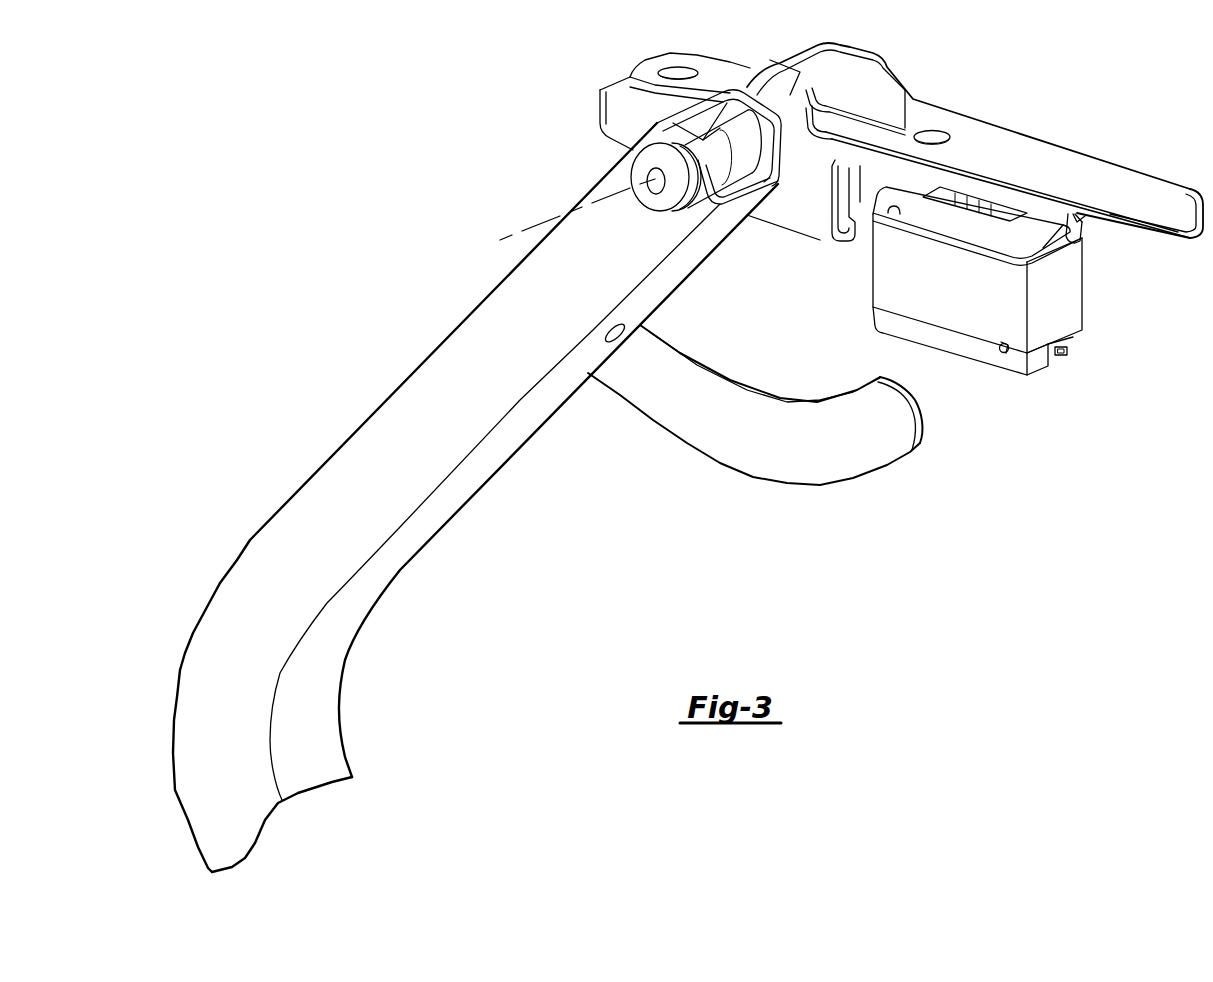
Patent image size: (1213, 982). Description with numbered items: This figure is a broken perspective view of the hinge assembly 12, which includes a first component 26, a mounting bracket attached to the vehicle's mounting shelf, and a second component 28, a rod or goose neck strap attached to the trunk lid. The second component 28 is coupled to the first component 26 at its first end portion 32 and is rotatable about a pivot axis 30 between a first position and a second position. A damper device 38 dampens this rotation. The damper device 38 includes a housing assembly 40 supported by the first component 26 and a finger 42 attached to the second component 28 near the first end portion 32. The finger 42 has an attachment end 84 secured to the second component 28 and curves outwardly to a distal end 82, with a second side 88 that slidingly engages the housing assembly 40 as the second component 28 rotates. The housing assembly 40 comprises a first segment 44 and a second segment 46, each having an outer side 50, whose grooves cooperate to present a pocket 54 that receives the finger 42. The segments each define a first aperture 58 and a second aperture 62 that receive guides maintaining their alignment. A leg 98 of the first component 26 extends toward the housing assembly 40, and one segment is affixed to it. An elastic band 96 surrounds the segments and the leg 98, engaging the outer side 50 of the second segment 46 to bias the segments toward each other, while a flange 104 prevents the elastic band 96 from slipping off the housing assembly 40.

The hinge assembly 12 is at (1100, 84).
The first component 26 is at (975, 128).
The second component 28 is at (478, 478).
The pivot axis 30 is at (540, 224).
The first end portion 32 is at (712, 228).
The damper device 38 is at (1047, 431).
The housing assembly 40 is at (1011, 292).
The finger 42 is at (793, 407).
The first segment 44 is at (1082, 250).
The second segment 46 is at (1035, 365).
The outer side 50 is at (897, 328).
The pocket 54 is at (982, 214).
The first aperture 58 is at (1000, 350).
The second aperture 62 is at (895, 216).
The distal end 82 is at (928, 405).
The attachment end 84 is at (658, 322).
The second side 88 is at (690, 430).
The elastic band 96 is at (1070, 313).
The leg 98 is at (1088, 223).
The flange 104 is at (1068, 352).